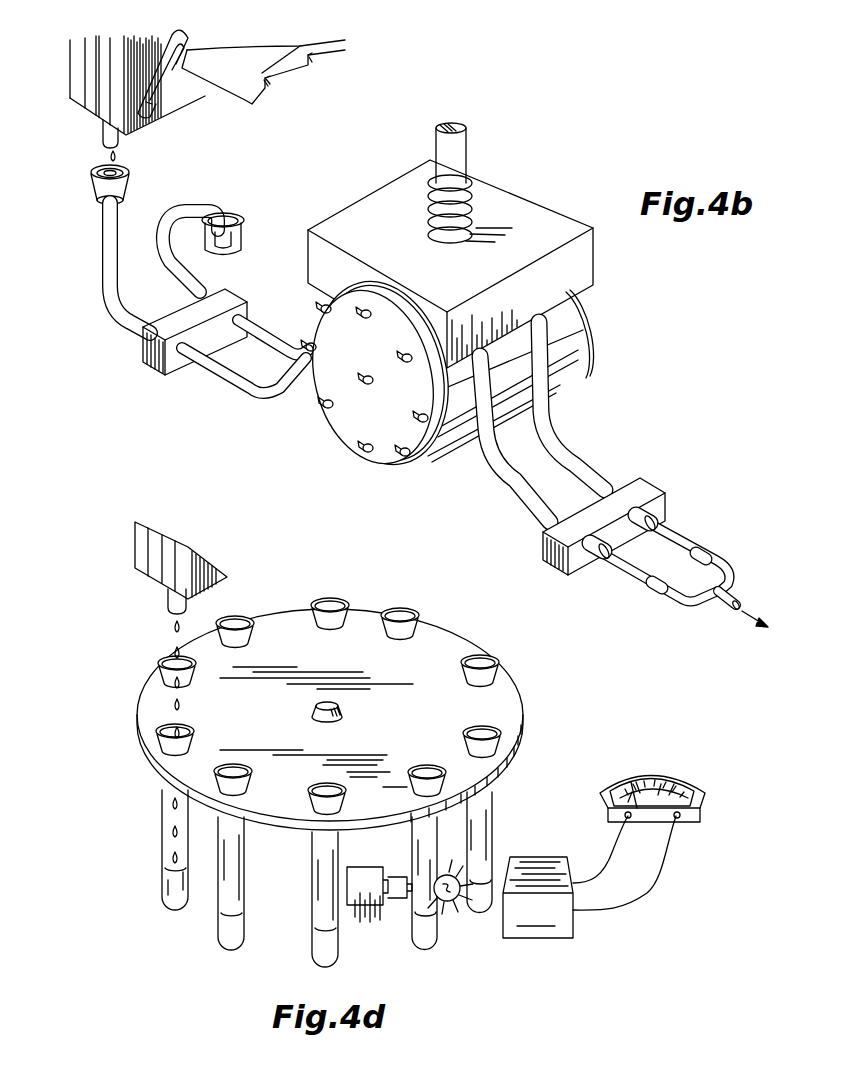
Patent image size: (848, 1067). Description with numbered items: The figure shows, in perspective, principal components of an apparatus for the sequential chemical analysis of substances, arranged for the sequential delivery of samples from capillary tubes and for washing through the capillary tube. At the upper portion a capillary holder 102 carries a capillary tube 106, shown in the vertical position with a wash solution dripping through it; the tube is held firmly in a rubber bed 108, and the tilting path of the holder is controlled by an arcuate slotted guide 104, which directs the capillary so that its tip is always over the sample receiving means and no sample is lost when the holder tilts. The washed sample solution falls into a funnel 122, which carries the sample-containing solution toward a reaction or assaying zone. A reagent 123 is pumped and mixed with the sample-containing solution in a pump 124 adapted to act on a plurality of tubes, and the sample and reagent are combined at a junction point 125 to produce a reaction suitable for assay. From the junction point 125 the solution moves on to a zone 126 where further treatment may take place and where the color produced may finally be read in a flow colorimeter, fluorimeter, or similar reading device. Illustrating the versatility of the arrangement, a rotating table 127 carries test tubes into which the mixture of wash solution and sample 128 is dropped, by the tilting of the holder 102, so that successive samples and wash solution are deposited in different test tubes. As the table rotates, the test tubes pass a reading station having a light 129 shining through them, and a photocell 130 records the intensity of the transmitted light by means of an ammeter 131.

In FIG. 4B, the capillary holder 102 is at (150, 112).
In FIG. 4B, the arcuate slotted guide 104 is at (165, 77).
In FIG. 4B, the capillary tube 106 is at (102, 135).
In FIG. 4B, the rubber bed 108 is at (92, 88).
In FIG. 4B, the funnel 122 is at (128, 189).
In FIG. 4B, the reagent 123 is at (240, 226).
In FIG. 4B, the pump 124 is at (437, 458).
In FIG. 4B, the junction point 125 is at (694, 610).
In FIG. 4B, the zone 126 is at (737, 613).
In FIG. 4D, the rotating table 127 is at (335, 600).
In FIG. 4D, the mixture of wash solution and sample 128 is at (168, 628).
In FIG. 4D, the light source 129 is at (455, 905).
In FIG. 4D, the photocell 130 is at (589, 877).
In FIG. 4D, the ammeter 131 is at (697, 783).